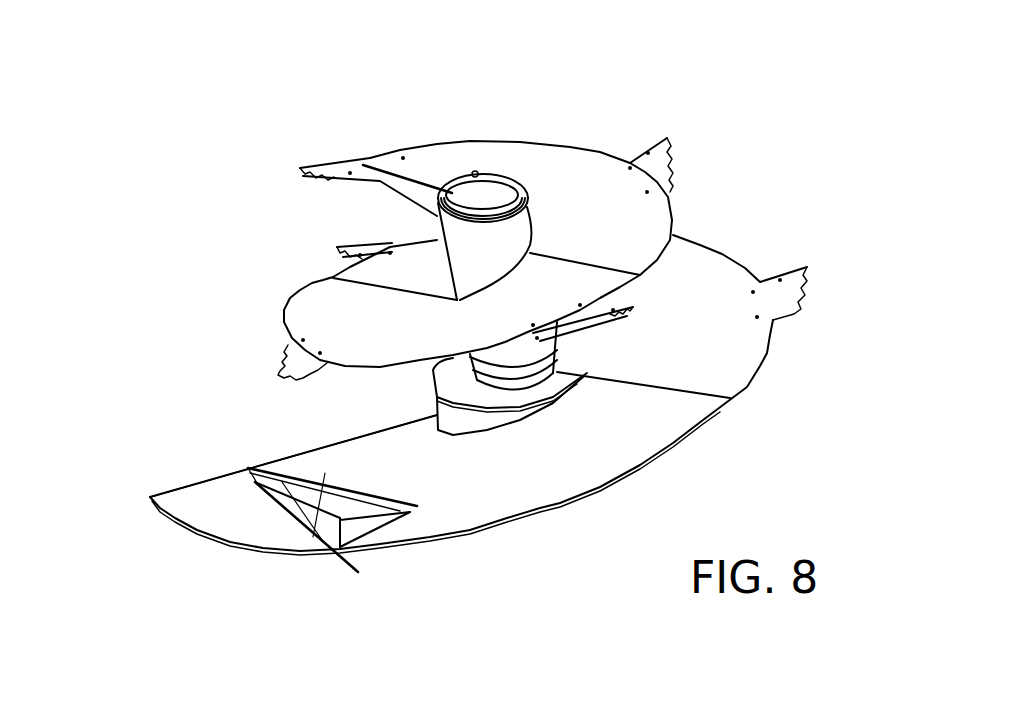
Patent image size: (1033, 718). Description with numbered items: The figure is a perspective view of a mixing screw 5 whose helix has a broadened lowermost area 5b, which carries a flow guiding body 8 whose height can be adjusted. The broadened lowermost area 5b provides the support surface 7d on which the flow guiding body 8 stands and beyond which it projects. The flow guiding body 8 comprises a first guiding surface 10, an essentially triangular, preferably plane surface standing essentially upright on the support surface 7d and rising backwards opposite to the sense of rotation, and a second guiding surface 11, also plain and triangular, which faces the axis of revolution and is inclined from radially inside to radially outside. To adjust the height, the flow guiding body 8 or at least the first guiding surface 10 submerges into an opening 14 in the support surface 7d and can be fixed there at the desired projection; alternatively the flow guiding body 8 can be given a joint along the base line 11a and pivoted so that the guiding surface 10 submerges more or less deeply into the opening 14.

The mixing screw 5 is at (735, 176).
The broadened lowermost area of the helix 5b is at (170, 524).
The support surface 7d is at (293, 463).
The flow guiding body 8 is at (270, 462).
The first guiding surface 10 is at (290, 498).
The second guiding surface 11 is at (367, 523).
The base line 11a is at (405, 508).
The opening 14 is at (297, 510).